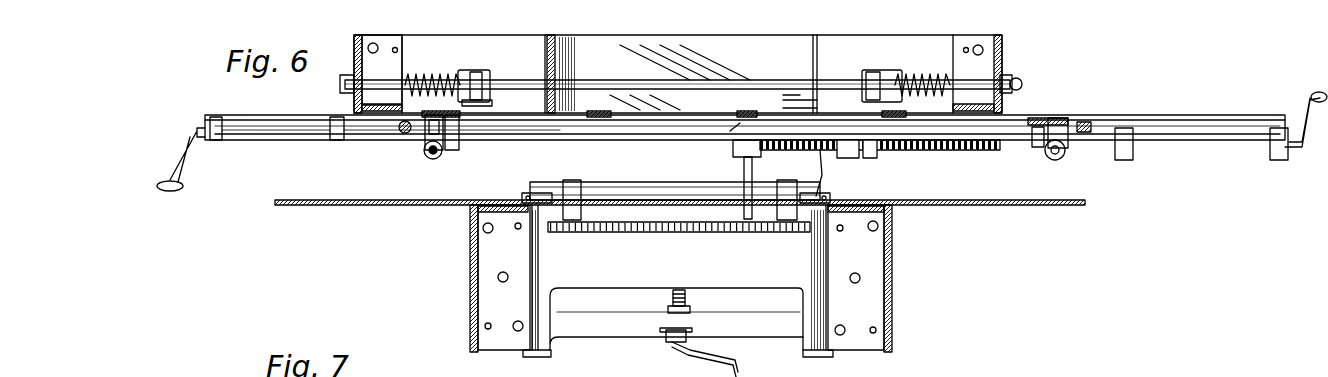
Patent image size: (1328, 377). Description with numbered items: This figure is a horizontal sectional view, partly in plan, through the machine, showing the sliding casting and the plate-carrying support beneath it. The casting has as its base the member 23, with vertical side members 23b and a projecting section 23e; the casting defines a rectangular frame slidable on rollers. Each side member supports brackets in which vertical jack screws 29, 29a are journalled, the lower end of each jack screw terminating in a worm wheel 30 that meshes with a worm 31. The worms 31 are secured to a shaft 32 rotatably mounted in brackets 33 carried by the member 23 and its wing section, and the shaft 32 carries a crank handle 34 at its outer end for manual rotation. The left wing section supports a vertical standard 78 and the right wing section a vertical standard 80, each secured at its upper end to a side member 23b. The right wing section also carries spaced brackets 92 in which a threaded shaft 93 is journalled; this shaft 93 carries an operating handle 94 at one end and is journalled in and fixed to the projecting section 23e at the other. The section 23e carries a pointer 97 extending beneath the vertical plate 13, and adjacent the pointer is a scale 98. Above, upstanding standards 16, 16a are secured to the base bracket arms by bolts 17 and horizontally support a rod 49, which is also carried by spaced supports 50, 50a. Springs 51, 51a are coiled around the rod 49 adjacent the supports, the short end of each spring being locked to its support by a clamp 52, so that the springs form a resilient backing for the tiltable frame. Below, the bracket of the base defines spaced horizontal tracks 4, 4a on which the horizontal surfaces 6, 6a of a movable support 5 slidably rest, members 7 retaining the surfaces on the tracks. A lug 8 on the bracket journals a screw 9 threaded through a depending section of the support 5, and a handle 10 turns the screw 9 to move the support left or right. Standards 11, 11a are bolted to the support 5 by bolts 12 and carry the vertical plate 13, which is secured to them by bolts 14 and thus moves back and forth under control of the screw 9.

The track 4 is at (546, 192).
The track 4a is at (822, 192).
The movable support 5 is at (627, 288).
The horizontal surface 6 is at (550, 346).
The horizontal surface 6a is at (806, 344).
The retaining member 7 is at (535, 194).
The lug 8 is at (670, 334).
The screw 9 is at (690, 298).
The handle 10 is at (706, 360).
The standard 11 is at (470, 282).
The standard 11a is at (892, 272).
The bolt 12 is at (510, 278).
The plate 13 is at (356, 206).
The bolt 14 is at (478, 212).
The standard 16 is at (972, 38).
The standard 16a is at (398, 42).
The bolt 17 is at (370, 44).
The casting base member 23 is at (258, 116).
The casting side member 23b is at (462, 122).
The projecting casting section 23e is at (722, 122).
The jack screw 29 is at (430, 158).
The jack screw 29a is at (1052, 160).
The worm wheel 30 is at (427, 142).
The worm 31 is at (442, 156).
The shaft 32 is at (296, 142).
The bracket 33 is at (222, 140).
The crank handle 34 is at (190, 175).
The rod 49 is at (660, 80).
The support 50 is at (868, 75).
The support 50a is at (490, 102).
The spring 51 is at (915, 78).
The spring 51a is at (440, 74).
The clamp 52 is at (485, 72).
The standard 78 is at (400, 133).
The standard 80 is at (1092, 122).
The bracket 92 is at (1128, 160).
The threaded shaft 93 is at (952, 152).
The operating handle 94 is at (1300, 104).
The pointer 97 is at (753, 168).
The scale 98 is at (660, 233).